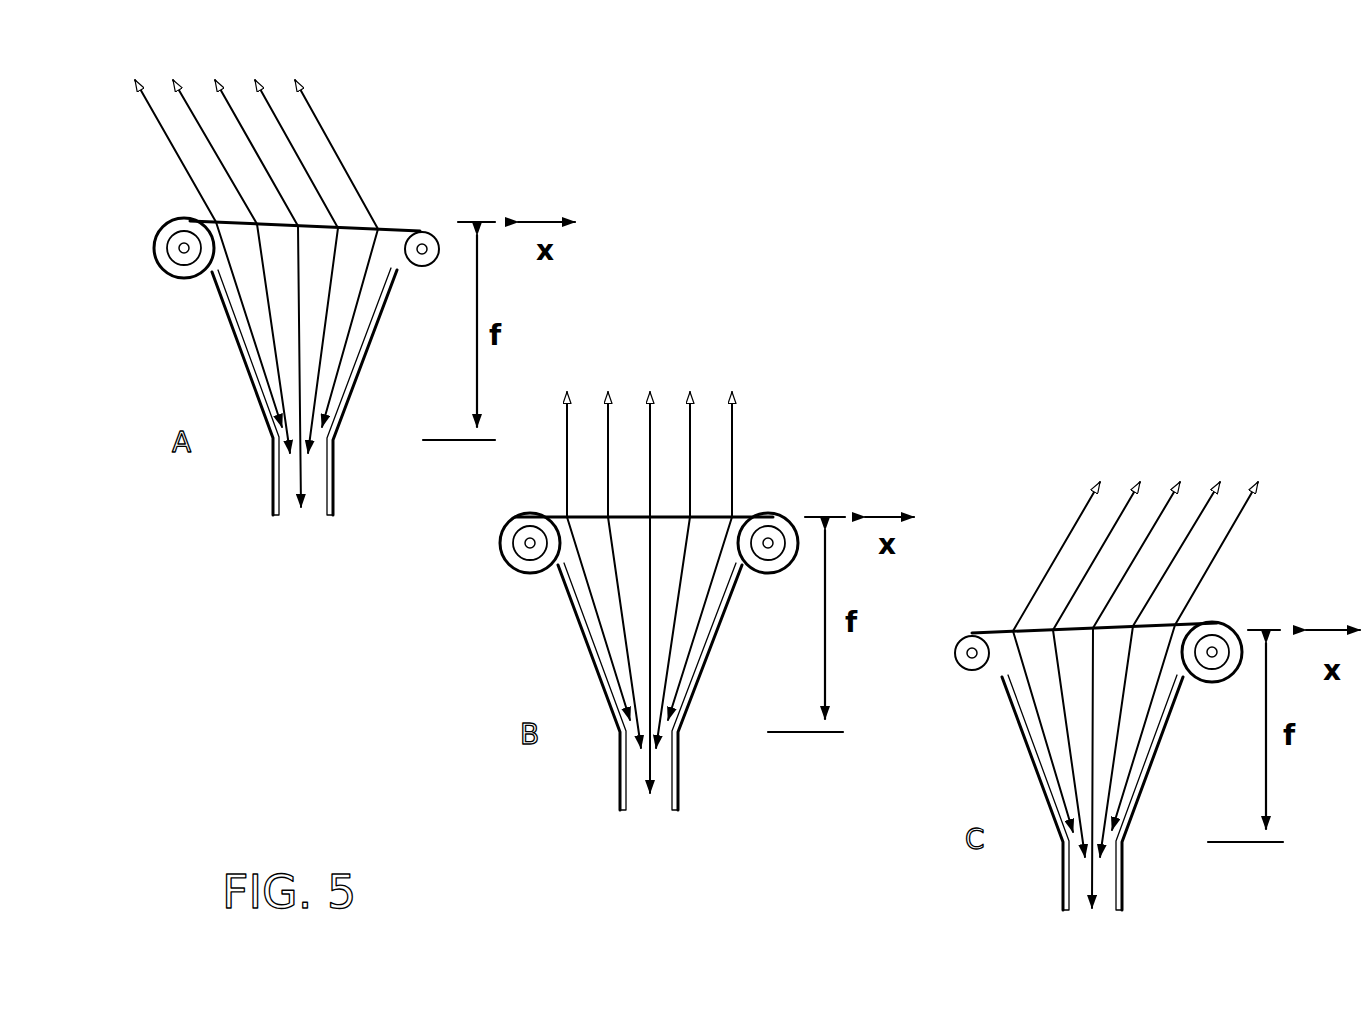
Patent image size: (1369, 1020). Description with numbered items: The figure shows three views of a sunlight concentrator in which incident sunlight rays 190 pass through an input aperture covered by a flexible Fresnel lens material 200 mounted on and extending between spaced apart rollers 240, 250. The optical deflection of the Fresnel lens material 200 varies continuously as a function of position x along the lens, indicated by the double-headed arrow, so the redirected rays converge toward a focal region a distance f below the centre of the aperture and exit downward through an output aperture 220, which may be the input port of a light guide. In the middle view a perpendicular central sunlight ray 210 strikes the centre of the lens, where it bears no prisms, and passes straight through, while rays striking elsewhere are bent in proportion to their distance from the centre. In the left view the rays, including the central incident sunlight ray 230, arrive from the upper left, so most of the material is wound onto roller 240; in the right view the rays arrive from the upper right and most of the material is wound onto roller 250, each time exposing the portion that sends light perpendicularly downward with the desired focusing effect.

The incident sunlight rays 190 is at (718, 475).
The Fresnel lens material 200 is at (400, 220).
The central sunlight ray 210 is at (658, 463).
The output aperture 220 is at (338, 440).
The central incident sunlight ray 230 is at (278, 163).
The roller 240 is at (184, 255).
The roller 250 is at (420, 256).